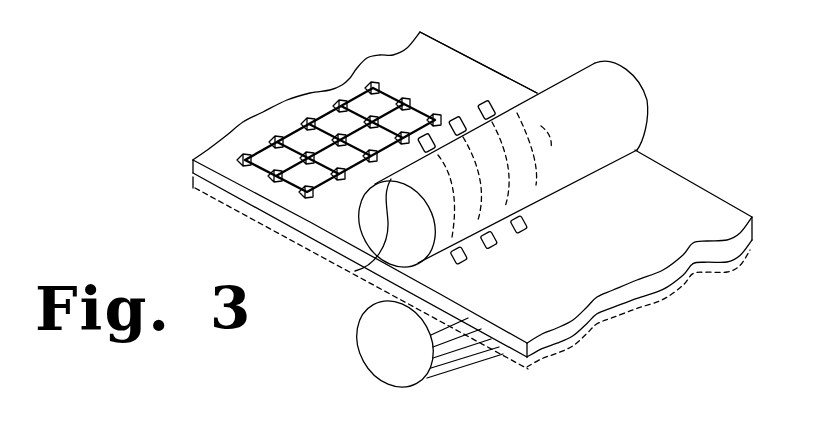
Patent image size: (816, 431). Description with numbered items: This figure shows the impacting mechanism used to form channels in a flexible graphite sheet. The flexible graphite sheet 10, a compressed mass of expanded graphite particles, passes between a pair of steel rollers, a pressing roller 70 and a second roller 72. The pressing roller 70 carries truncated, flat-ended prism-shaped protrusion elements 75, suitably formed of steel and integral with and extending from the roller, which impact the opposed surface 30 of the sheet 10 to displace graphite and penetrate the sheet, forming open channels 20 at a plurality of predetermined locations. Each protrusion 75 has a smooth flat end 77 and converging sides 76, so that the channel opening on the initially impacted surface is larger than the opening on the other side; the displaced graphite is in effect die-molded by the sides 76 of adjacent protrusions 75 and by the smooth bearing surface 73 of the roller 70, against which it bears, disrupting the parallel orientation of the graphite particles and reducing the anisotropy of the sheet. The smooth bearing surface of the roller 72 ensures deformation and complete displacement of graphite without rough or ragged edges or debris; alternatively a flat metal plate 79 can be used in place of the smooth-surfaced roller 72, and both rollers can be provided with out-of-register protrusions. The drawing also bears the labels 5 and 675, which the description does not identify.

The protruding elements 5 is at (354, 93).
The flexible graphite sheet 10 is at (687, 181).
The channels 20 is at (307, 118).
The opposed surface 30 is at (473, 85).
The pressing roller 70 is at (603, 83).
The roller 72 is at (382, 322).
The smooth bearing surface 73 is at (453, 133).
The protrusion elements 75 is at (487, 120).
The converging sides 76 is at (520, 83).
The smooth flat ends 77 is at (308, 248).
The flat metal plate 79 is at (600, 312).
The guide element 675 is at (355, 271).